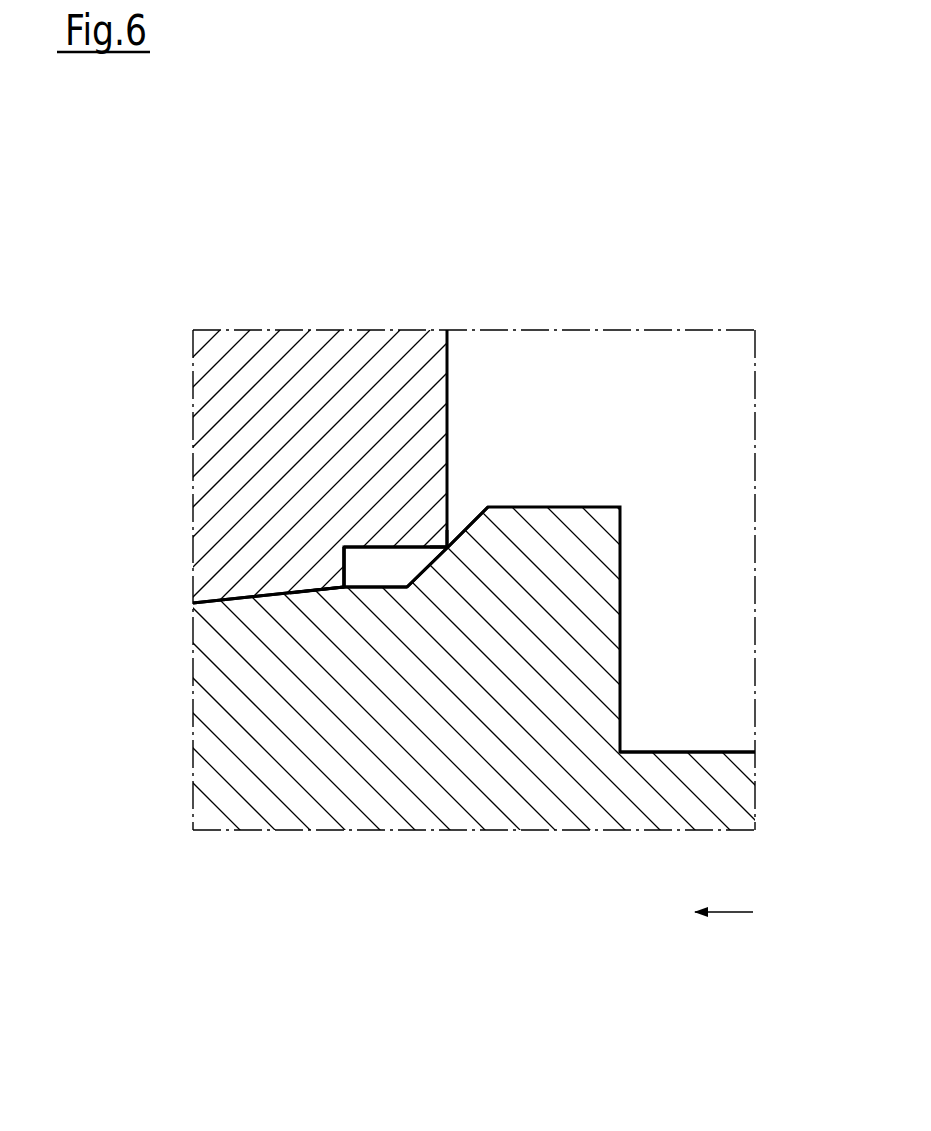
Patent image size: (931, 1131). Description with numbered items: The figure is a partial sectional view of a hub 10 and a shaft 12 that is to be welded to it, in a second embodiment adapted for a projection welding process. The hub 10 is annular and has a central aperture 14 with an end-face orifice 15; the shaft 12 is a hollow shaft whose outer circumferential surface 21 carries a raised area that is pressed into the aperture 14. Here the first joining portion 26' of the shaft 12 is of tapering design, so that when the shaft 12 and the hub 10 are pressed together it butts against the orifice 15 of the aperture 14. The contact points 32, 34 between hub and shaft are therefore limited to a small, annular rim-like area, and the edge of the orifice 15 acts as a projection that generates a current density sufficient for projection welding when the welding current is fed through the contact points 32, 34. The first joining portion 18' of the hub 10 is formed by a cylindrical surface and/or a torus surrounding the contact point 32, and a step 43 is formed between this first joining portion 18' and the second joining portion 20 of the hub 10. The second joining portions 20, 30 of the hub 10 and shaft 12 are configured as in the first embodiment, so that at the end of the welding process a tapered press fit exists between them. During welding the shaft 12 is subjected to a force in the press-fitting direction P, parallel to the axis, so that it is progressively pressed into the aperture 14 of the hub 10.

The hub 10 is at (303, 397).
The shaft 12 is at (304, 757).
The aperture 14 is at (380, 556).
The first joining portion 18' is at (395, 385).
The contact point 32 is at (437, 540).
The end-face orifice 15 is at (451, 543).
The contact point 34 is at (458, 556).
The step 43 is at (344, 570).
The second joining portion 20 is at (233, 597).
The second joining portion 30 is at (306, 598).
The outer circumferential surface 21 is at (675, 752).
The first joining portion 26' is at (493, 744).
The press-fitting direction P is at (738, 909).